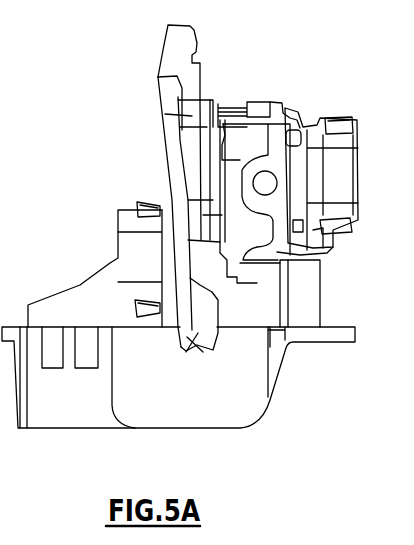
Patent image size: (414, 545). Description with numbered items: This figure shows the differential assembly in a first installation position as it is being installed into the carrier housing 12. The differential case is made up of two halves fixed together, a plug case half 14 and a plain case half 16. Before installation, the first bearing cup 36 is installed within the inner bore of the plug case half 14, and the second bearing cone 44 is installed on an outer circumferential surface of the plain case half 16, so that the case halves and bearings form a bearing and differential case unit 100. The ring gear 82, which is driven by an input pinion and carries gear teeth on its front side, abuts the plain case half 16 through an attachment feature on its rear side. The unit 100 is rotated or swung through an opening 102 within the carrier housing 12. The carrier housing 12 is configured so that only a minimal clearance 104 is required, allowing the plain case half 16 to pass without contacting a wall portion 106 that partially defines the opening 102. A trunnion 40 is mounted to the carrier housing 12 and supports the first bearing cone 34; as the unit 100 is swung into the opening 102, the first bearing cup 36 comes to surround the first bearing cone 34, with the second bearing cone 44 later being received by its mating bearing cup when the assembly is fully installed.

The carrier housing 12 is at (255, 418).
The plug case half 14 is at (193, 116).
The plain case half 16 is at (278, 102).
The first bearing cone 34 is at (135, 207).
The first bearing cup 36 is at (165, 148).
The trunnion 40 is at (118, 228).
The second bearing cone 44 is at (350, 138).
The ring gear 82 is at (190, 345).
The bearing and differential case unit 100 is at (305, 96).
The opening 102 is at (264, 300).
The minimal clearance 104 is at (300, 257).
The wall portion 106 is at (310, 300).